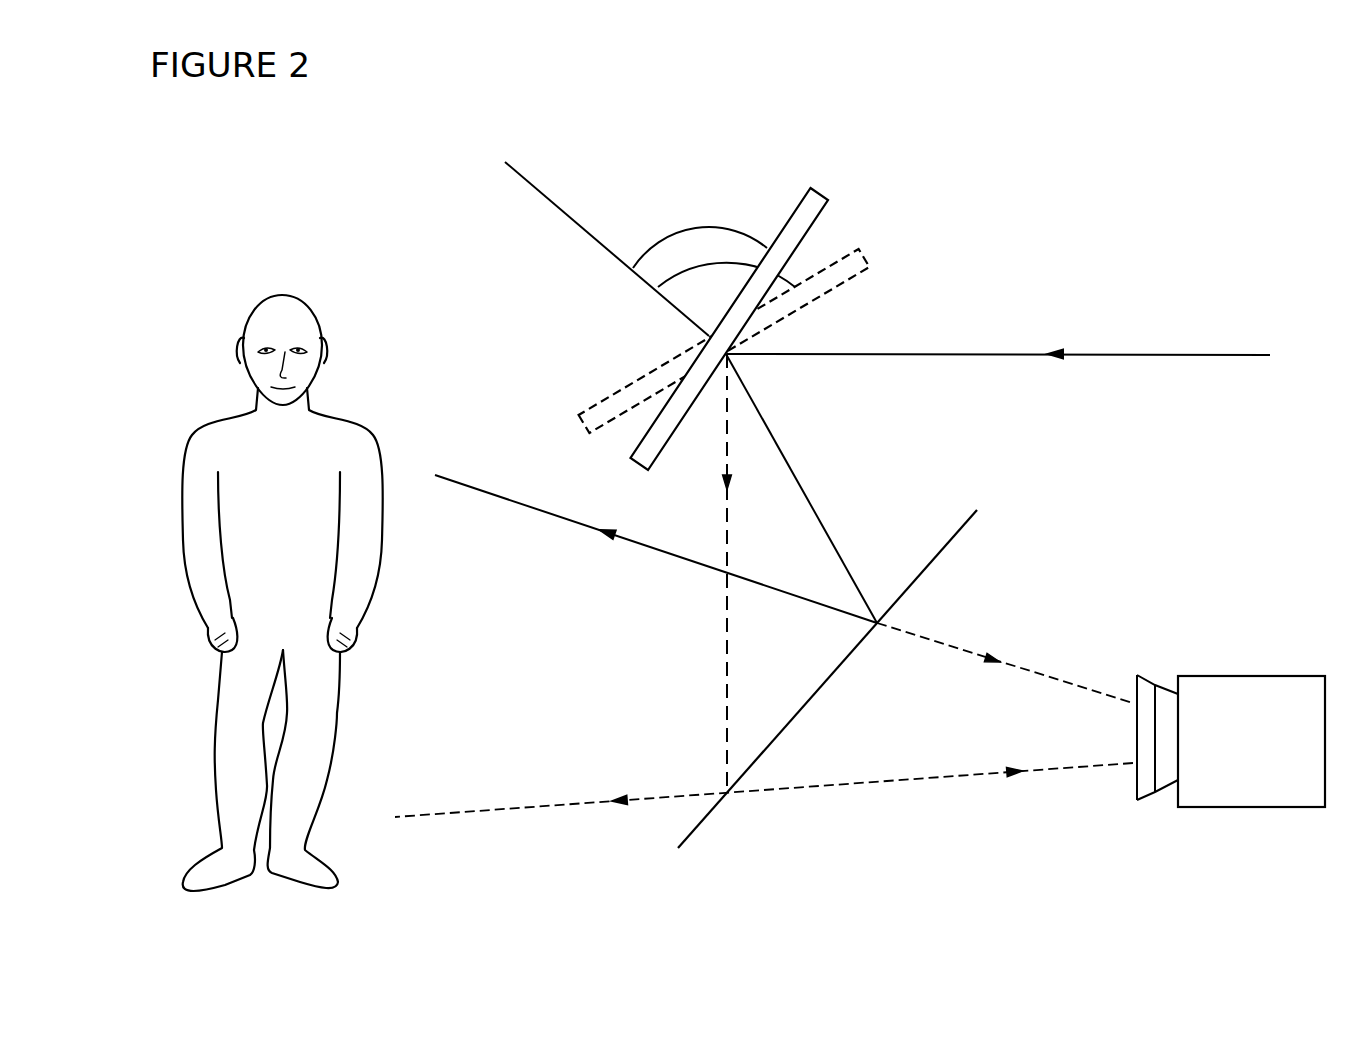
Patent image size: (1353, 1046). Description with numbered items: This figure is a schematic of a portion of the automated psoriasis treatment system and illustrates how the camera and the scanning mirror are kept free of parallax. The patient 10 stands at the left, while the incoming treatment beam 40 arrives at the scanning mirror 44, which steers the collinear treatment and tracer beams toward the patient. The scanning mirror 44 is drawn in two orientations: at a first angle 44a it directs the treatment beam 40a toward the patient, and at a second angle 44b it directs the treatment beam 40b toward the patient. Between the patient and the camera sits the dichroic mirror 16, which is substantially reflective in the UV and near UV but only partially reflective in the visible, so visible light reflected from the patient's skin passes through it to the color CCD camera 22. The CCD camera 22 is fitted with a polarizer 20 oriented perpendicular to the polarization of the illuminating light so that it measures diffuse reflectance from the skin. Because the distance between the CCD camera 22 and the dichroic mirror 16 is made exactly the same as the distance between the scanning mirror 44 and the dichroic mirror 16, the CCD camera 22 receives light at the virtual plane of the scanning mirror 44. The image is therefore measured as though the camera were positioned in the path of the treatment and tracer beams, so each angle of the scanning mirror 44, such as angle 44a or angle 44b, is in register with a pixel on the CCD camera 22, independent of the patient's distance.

The patient 10 is at (222, 442).
The dichroic mirror 16 is at (952, 545).
The polarizer 20 is at (1147, 683).
The color CCD camera 22 is at (1235, 807).
The treatment beam 40 is at (1167, 353).
The treatment beam 40a is at (552, 513).
The treatment beam 40b is at (510, 806).
The scanning mirror 44 is at (843, 222).
The angle 44a is at (643, 252).
The angle 44b is at (706, 264).